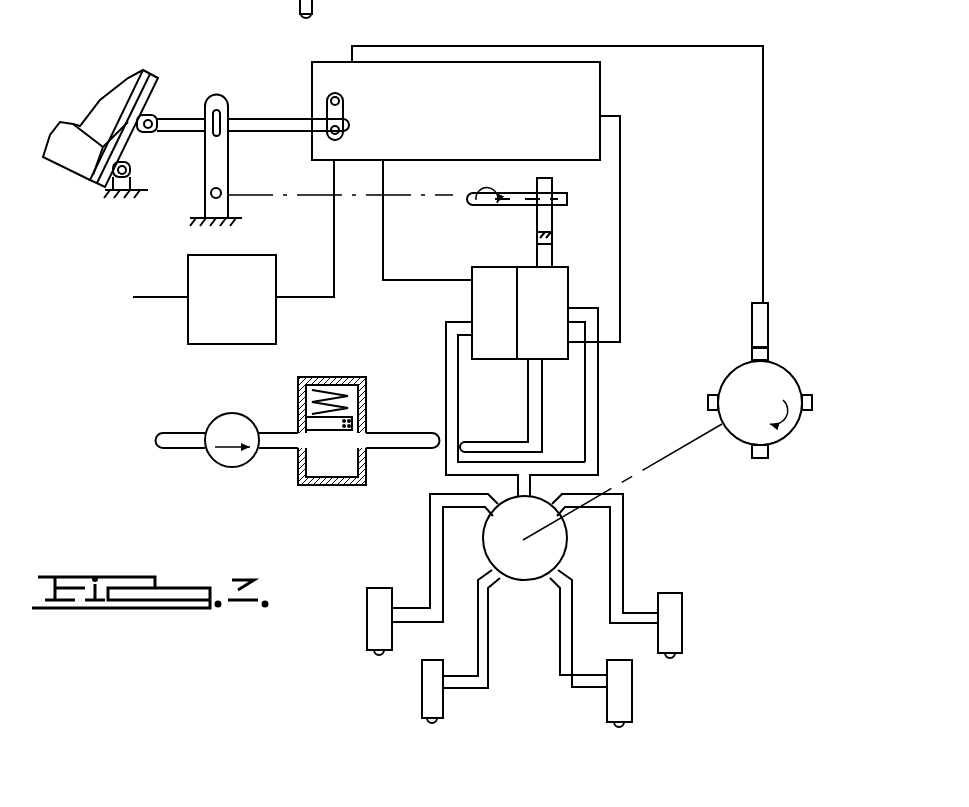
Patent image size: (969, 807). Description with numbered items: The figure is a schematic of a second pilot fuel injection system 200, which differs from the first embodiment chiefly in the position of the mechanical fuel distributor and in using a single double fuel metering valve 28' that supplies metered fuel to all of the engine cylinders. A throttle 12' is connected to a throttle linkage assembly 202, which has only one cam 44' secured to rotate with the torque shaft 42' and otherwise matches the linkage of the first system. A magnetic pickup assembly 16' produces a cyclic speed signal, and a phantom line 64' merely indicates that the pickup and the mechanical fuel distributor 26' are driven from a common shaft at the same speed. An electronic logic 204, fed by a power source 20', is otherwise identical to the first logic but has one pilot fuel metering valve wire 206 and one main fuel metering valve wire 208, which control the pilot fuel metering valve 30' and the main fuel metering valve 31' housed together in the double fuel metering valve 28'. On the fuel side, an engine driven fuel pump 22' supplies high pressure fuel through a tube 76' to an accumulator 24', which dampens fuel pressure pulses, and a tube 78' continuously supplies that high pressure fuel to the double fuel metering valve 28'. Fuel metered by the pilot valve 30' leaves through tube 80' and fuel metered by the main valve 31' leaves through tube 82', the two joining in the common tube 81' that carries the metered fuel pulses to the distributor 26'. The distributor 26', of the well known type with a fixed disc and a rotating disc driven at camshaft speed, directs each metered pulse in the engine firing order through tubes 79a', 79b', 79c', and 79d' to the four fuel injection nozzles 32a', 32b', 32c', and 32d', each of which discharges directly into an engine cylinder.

The throttle 12' is at (118, 106).
The throttle linkage assembly 202 is at (263, 118).
The electronic logic 204 is at (606, 82).
The pilot fuel metering valve wire 206 is at (385, 181).
The main fuel metering valve wire 208 is at (622, 211).
The pilot fuel injection system 200 is at (778, 206).
The cam 44' is at (610, 202).
The torque shaft 42' is at (489, 221).
The power source 20' is at (217, 252).
The double fuel metering valve 28' is at (471, 313).
The pilot fuel metering valve 30' is at (495, 313).
The main fuel metering valve 31' is at (542, 313).
The tube 80' is at (485, 409).
The tube 82' is at (608, 402).
The tube 81' is at (555, 423).
The mechanical fuel distributor 26' is at (589, 537).
The phantom line 64' is at (622, 465).
The magnetic pickup assembly 16' is at (782, 369).
The accumulator 24' is at (331, 405).
The fuel pump 22' is at (179, 421).
The tube 76' is at (227, 479).
The tube 78' is at (403, 464).
The tube 79a' is at (425, 558).
The tube 79b' is at (493, 664).
The tube 79c' is at (552, 628).
The tube 79d' is at (644, 558).
The fuel injection nozzle 32a' is at (327, 626).
The fuel injection nozzle 32b' is at (382, 697).
The fuel injection nozzle 32c' is at (661, 693).
The fuel injection nozzle 32d' is at (712, 625).